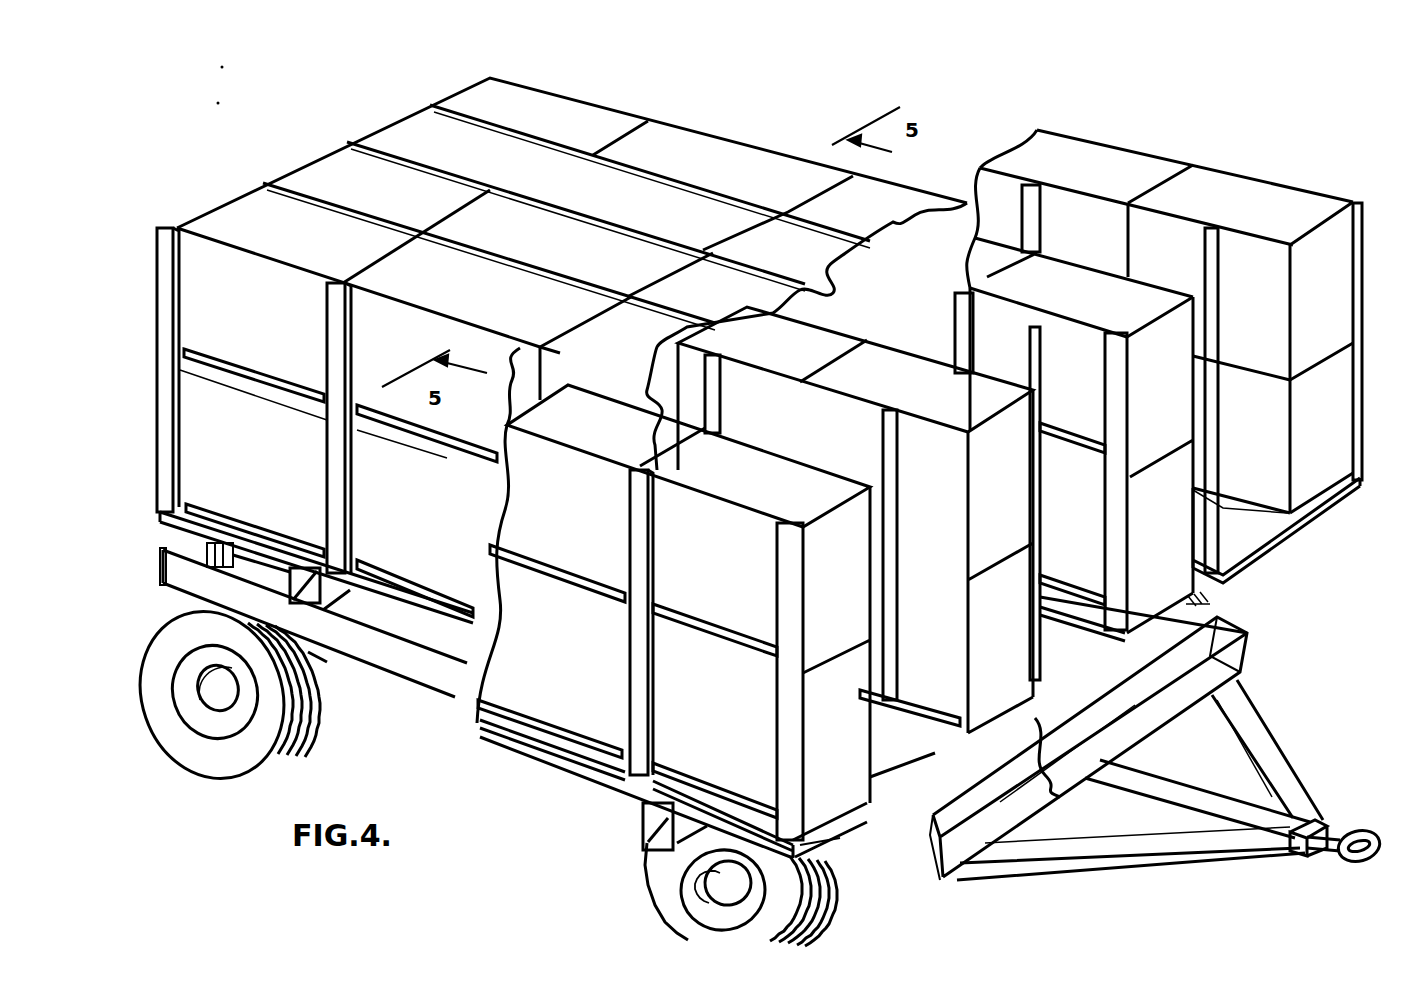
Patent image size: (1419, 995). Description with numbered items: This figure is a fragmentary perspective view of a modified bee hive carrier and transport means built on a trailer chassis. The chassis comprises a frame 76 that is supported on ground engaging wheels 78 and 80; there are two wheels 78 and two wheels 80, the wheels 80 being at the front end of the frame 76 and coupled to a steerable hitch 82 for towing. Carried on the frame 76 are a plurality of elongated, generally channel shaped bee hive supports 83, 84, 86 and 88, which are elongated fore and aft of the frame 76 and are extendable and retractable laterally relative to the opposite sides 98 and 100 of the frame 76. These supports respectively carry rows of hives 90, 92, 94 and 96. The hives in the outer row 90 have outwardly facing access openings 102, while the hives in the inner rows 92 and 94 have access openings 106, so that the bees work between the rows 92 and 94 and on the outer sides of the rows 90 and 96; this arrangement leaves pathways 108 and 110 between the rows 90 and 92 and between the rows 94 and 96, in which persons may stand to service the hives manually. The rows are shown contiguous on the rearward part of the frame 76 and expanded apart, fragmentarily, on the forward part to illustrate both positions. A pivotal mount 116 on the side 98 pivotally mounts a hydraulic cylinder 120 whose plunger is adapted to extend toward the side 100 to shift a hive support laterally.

The frame 76 is at (412, 668).
The ground engaging wheels 78 is at (170, 670).
The ground engaging wheels 80 is at (657, 865).
The steerable hitch 82 is at (1265, 762).
The bee hive support 83 is at (840, 840).
The bee hive support 84 is at (1047, 732).
The bee hive support 86 is at (1200, 603).
The bee hive support 88 is at (1322, 520).
The row of hives 90 is at (799, 486).
The row of hives 92 is at (893, 376).
The row of hives 94 is at (1062, 282).
The row of hives 96 is at (1146, 174).
The side of the frame 98 is at (945, 878).
The side of the frame 100 is at (1243, 628).
The access openings 102 is at (737, 632).
The access openings 106 is at (1074, 427).
The pathway 108 is at (903, 757).
The pathway 110 is at (1233, 527).
The pivotal mount 116 is at (168, 543).
The hydraulic cylinder 120 is at (247, 557).